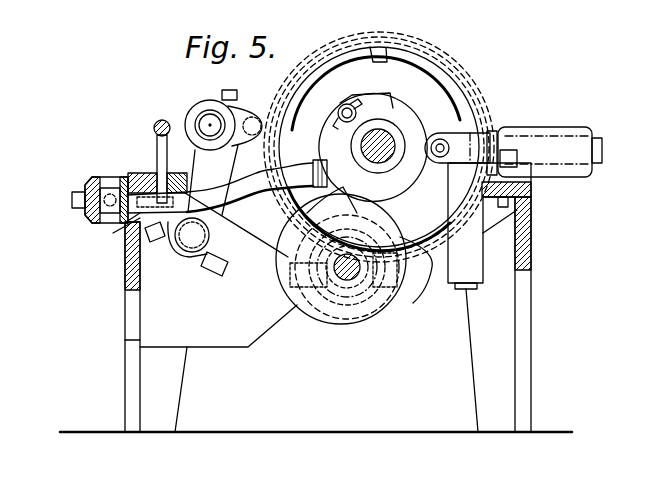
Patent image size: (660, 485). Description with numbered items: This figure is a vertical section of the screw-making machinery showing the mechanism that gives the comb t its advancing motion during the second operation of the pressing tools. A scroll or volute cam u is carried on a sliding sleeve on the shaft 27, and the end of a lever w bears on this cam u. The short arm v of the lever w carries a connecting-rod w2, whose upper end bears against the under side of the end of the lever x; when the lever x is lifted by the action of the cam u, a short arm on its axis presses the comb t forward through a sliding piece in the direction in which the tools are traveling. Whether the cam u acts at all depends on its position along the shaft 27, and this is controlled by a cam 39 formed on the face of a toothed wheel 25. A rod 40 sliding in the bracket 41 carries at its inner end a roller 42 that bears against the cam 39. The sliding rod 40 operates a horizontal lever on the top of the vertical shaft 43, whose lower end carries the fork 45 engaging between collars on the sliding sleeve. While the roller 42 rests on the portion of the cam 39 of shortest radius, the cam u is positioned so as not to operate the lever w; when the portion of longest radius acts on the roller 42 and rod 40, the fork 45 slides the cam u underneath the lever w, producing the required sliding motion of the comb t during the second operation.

The toothed wheel 25 is at (364, 45).
The cam 39 is at (359, 114).
The comb t is at (206, 108).
The lever w is at (227, 186).
The connecting-rod w2 is at (158, 146).
The lever x is at (154, 127).
The short arm v is at (114, 234).
The scroll or volute cam u is at (341, 255).
The shaft 27 is at (349, 273).
The fork 45 is at (413, 290).
The vertical shaft 43 is at (470, 289).
The roller 42 is at (460, 188).
The sliding rod 40 is at (498, 134).
The bracket 41 is at (550, 152).